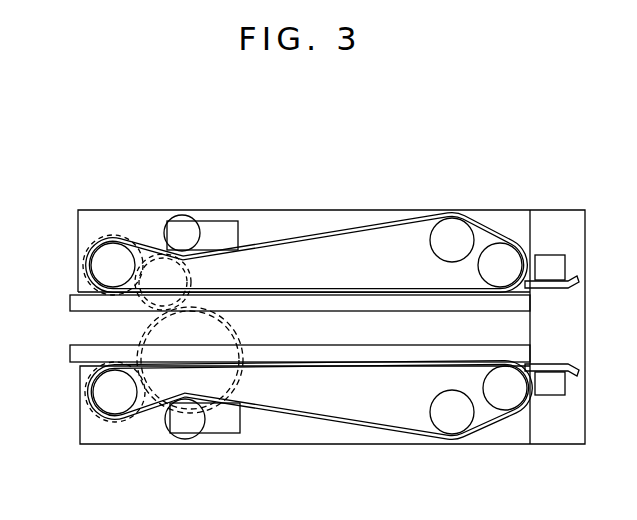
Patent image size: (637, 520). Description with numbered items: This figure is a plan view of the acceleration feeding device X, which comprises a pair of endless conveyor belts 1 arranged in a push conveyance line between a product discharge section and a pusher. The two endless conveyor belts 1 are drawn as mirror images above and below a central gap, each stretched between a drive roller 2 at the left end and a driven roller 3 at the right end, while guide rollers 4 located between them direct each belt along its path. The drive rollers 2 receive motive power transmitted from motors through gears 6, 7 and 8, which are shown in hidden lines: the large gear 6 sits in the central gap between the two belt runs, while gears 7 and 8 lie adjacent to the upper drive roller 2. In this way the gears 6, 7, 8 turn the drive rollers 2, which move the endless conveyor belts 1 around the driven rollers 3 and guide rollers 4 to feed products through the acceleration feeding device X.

The endless conveyor belts 1 is at (337, 230).
The drive rollers 2 is at (103, 255).
The driven rollers 3 is at (499, 258).
The guide rollers 4 is at (183, 215).
The gear 6 is at (163, 340).
The gear 7 is at (156, 258).
The gear 8 is at (122, 238).
The acceleration feeding device X is at (308, 203).